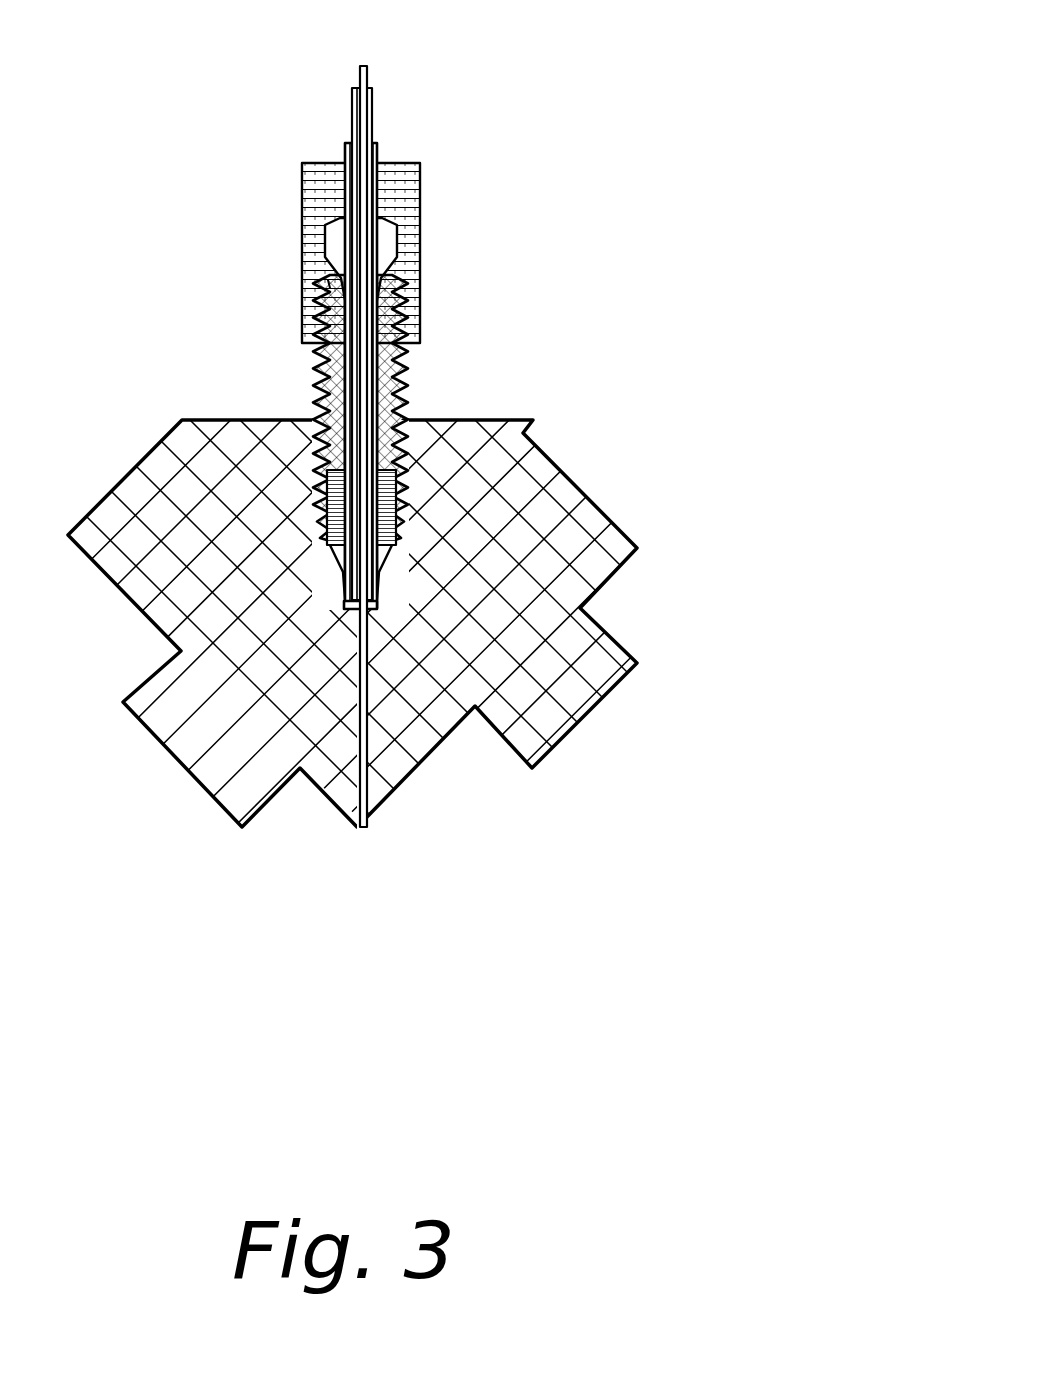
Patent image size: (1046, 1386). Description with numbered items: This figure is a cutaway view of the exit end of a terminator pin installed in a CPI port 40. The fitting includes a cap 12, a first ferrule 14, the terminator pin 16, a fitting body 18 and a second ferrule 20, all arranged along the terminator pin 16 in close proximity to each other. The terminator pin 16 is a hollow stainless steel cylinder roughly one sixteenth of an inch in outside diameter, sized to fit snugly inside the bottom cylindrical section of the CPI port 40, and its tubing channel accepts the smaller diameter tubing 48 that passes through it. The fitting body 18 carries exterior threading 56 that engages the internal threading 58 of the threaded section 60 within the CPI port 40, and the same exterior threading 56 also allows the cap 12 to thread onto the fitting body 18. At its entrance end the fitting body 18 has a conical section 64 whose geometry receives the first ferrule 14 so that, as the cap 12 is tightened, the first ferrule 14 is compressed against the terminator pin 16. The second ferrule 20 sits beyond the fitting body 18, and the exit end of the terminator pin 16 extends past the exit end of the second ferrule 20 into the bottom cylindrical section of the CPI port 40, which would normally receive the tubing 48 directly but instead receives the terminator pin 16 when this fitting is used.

The cap 12 is at (402, 192).
The first ferrule 14 is at (380, 245).
The terminator pin 16 is at (377, 145).
The fitting body 18 is at (417, 323).
The second ferrule 20 is at (387, 497).
The CPI port 40 is at (715, 585).
The tubing 48 is at (368, 88).
The exterior threading 56 is at (397, 362).
The internal threading 58 is at (403, 483).
The threaded section 60 is at (263, 508).
The conical section 64 is at (317, 290).